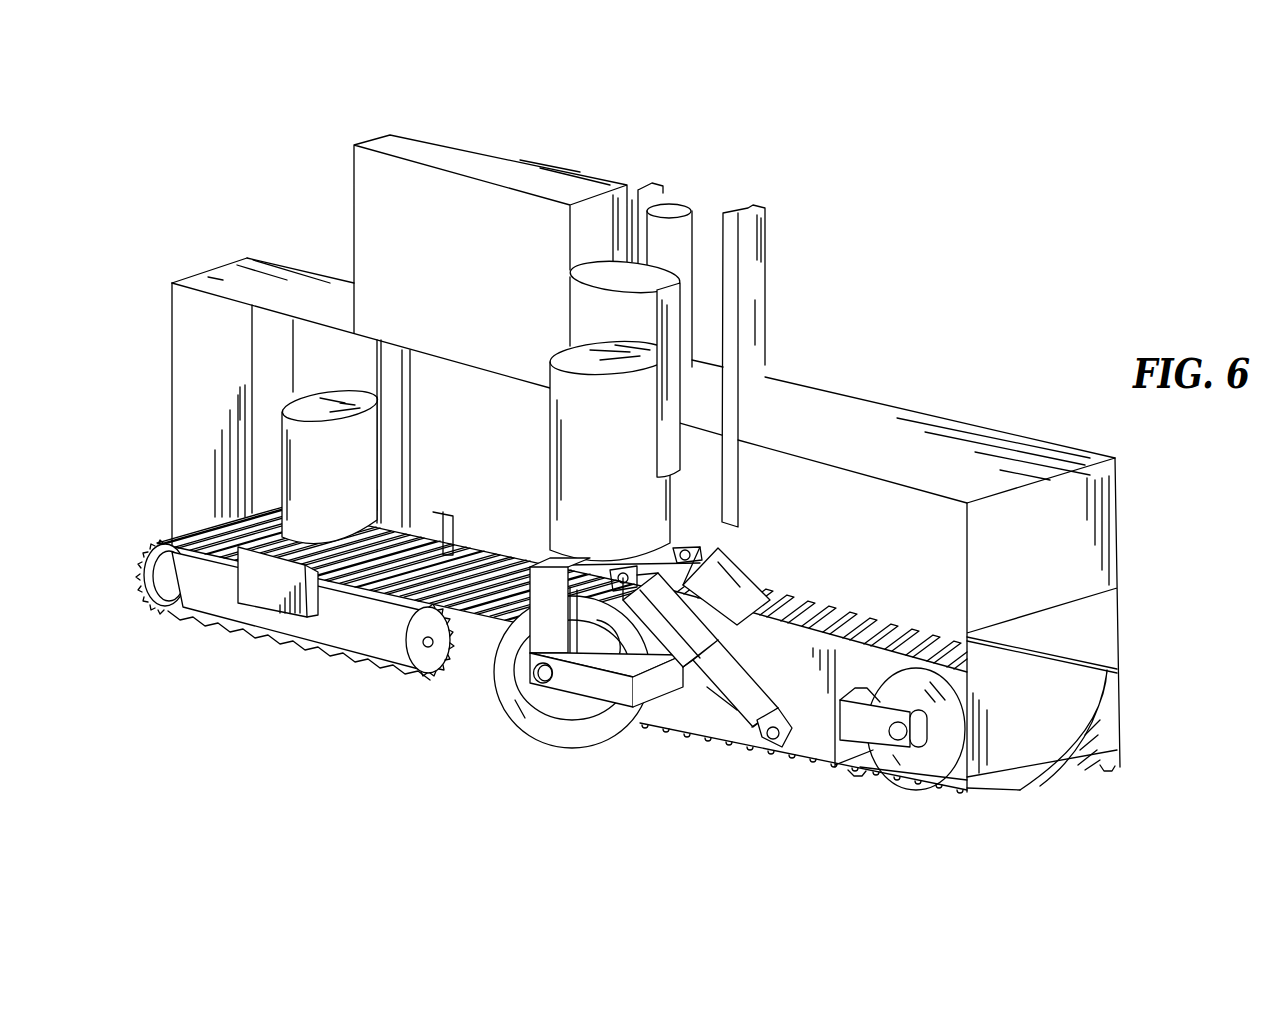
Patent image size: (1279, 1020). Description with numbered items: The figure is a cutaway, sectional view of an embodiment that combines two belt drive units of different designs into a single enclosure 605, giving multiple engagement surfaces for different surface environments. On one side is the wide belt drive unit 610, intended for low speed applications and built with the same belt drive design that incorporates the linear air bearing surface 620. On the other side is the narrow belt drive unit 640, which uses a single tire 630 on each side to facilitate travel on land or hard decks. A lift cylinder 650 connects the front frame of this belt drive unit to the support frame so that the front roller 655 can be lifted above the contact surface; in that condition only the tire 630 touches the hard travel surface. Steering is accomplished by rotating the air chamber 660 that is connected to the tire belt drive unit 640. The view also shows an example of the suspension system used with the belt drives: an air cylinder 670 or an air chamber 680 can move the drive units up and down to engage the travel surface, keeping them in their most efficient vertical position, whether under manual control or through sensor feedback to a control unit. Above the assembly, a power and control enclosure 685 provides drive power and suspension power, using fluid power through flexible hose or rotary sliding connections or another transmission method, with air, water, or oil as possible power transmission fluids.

The single enclosure 605 is at (939, 419).
The wide belt drive unit 610 is at (205, 612).
The linear air bearing surface 620 is at (338, 665).
The tire 630 is at (552, 762).
The narrow belt drive unit 640 is at (680, 735).
The lift cylinder 650 is at (752, 747).
The front roller 655 is at (930, 768).
The air chamber 660 is at (631, 469).
The air cylinder 670 is at (605, 310).
The air chamber 680 is at (317, 350).
The power and control enclosure 685 is at (409, 146).